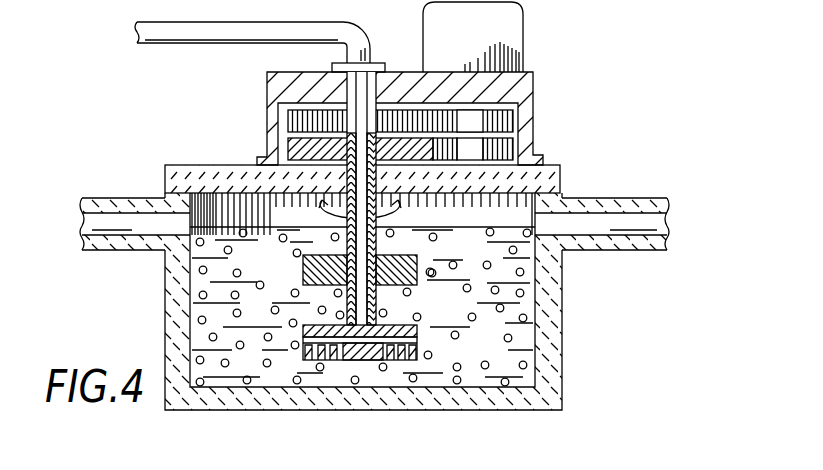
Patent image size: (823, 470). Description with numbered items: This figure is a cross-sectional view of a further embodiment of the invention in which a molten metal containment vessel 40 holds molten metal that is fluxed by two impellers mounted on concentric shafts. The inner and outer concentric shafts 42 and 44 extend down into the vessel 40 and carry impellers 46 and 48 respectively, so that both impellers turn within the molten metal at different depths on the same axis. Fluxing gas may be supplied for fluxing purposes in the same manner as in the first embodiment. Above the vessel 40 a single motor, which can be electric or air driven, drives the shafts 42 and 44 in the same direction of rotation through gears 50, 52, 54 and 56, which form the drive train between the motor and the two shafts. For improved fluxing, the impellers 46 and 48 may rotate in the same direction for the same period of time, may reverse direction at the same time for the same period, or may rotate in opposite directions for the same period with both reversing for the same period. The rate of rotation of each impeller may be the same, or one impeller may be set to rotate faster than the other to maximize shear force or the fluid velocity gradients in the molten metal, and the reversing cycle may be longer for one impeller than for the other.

The molten metal containment vessel 40 is at (580, 337).
The concentric shaft 42 is at (378, 247).
The concentric shaft 44 is at (376, 290).
The impeller 46 is at (303, 263).
The impeller 48 is at (417, 337).
The gear 50 is at (283, 118).
The gear 52 is at (288, 157).
The gear 54 is at (515, 122).
The gear 56 is at (515, 148).